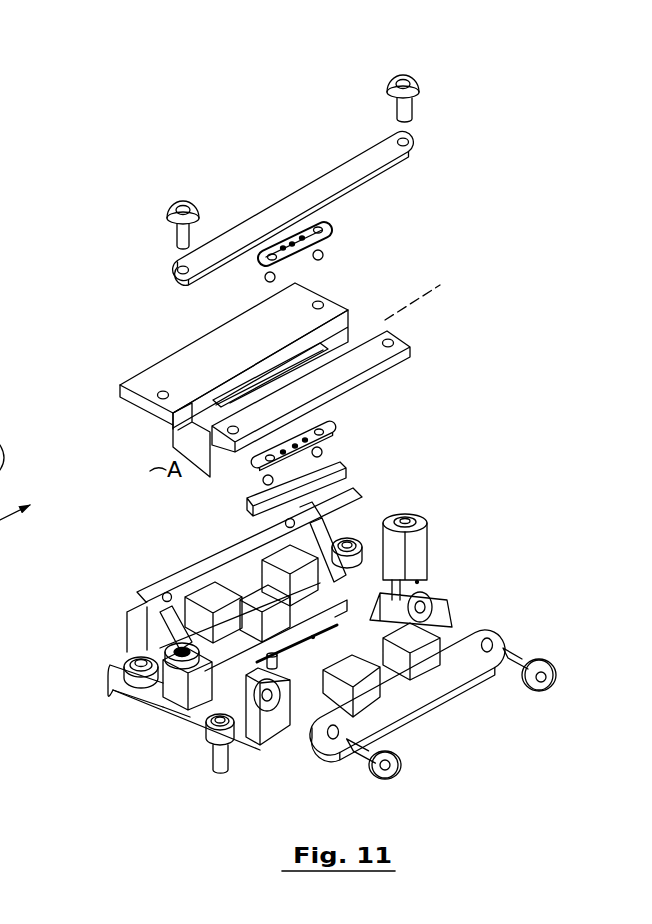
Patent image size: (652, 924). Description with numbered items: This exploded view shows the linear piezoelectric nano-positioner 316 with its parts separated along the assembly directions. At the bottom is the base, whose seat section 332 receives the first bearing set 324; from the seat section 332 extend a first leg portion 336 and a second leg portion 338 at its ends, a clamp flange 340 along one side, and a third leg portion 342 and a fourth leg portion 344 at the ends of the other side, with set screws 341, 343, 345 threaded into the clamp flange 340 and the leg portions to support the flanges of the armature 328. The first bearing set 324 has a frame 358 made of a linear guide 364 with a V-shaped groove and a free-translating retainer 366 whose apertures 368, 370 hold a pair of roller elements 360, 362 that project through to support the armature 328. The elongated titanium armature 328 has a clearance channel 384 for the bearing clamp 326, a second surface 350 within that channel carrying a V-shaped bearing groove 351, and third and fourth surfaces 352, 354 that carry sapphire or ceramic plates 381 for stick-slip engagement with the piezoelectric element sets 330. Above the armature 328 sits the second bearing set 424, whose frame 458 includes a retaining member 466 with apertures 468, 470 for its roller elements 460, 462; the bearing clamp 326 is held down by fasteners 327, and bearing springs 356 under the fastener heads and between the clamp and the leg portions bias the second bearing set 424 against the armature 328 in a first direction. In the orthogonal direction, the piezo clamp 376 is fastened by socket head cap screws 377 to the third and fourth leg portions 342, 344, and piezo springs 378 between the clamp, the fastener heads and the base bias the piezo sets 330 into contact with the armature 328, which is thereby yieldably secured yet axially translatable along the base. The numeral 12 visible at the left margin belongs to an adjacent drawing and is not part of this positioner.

The linear piezoelectric nano-positioner 316 is at (245, 98).
The bearing clamp 326 is at (430, 131).
The bearing springs 356 is at (417, 87).
The fasteners 327 is at (383, 95).
The frame 458 is at (350, 210).
The second bearing set 424 is at (388, 222).
The aperture 468 is at (337, 232).
The roller element 462 is at (325, 256).
The roller element 460 is at (283, 276).
The retaining member 466 is at (257, 262).
The aperture 470 is at (233, 287).
The second surface 350 is at (215, 406).
The clearance channel 384 is at (170, 450).
The third surface 352 is at (160, 425).
The plates 381 is at (163, 450).
The fourth surface 354 is at (212, 482).
The bearing groove 351 is at (340, 347).
The armature 328 is at (450, 320).
The retainer 366 is at (340, 428).
The aperture 368 is at (345, 470).
The first bearing set 324 is at (420, 422).
The frame 358 is at (342, 428).
The linear guide 364 is at (348, 477).
The aperture 370 is at (247, 482).
The roller element 360 is at (262, 488).
The roller element 362 is at (240, 512).
The clamp flange 340 is at (147, 588).
The set screw 341 is at (300, 518).
The piezoelectric element sets 330 is at (300, 629).
The second leg portion 338 is at (418, 573).
The set screw 345 is at (413, 573).
The fourth leg portion 344 is at (420, 582).
The piezo springs 378 is at (447, 603).
The piezo clamp 376 is at (517, 628).
The fasteners 377 is at (410, 755).
The first leg portion 336 is at (173, 682).
The set screw 343 is at (243, 660).
The seat section 332 is at (213, 723).
The third leg portion 342 is at (252, 707).
The device 12 is at (7, 402).